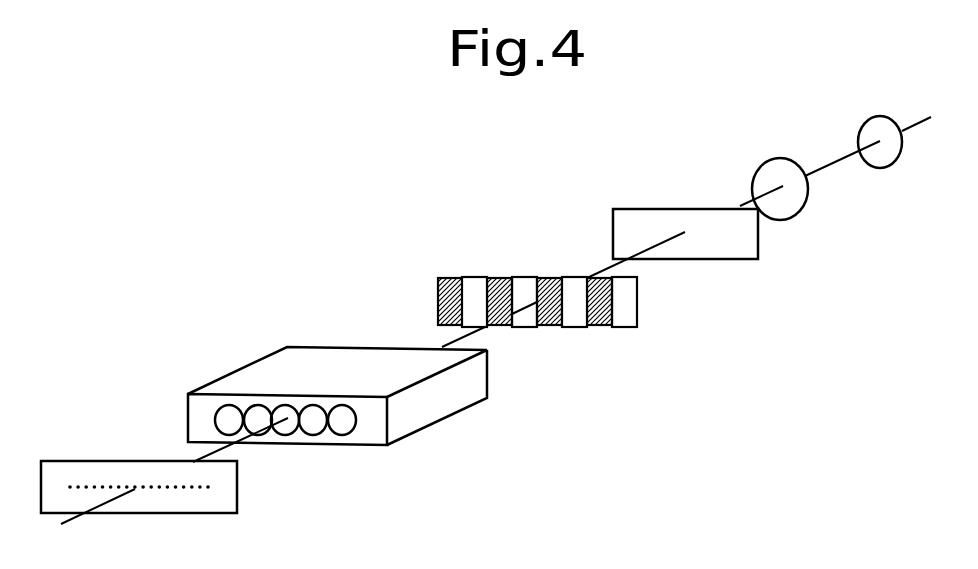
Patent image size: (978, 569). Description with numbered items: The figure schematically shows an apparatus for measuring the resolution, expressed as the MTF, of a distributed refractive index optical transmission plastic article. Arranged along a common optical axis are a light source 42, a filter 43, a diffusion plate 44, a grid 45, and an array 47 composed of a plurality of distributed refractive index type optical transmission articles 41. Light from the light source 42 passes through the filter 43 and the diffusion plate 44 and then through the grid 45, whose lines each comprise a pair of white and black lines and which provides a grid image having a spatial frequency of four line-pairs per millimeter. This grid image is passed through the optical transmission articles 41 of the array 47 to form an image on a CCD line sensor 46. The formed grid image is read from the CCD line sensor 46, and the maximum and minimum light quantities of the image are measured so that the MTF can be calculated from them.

The distributed refractive index type optical transmission articles 41 is at (258, 416).
The light source 42 is at (873, 123).
The filter 43 is at (770, 168).
The diffusion plate 44 is at (640, 218).
The grid 45 is at (473, 288).
The CCD line sensor 46 is at (120, 466).
The array 47 is at (335, 357).